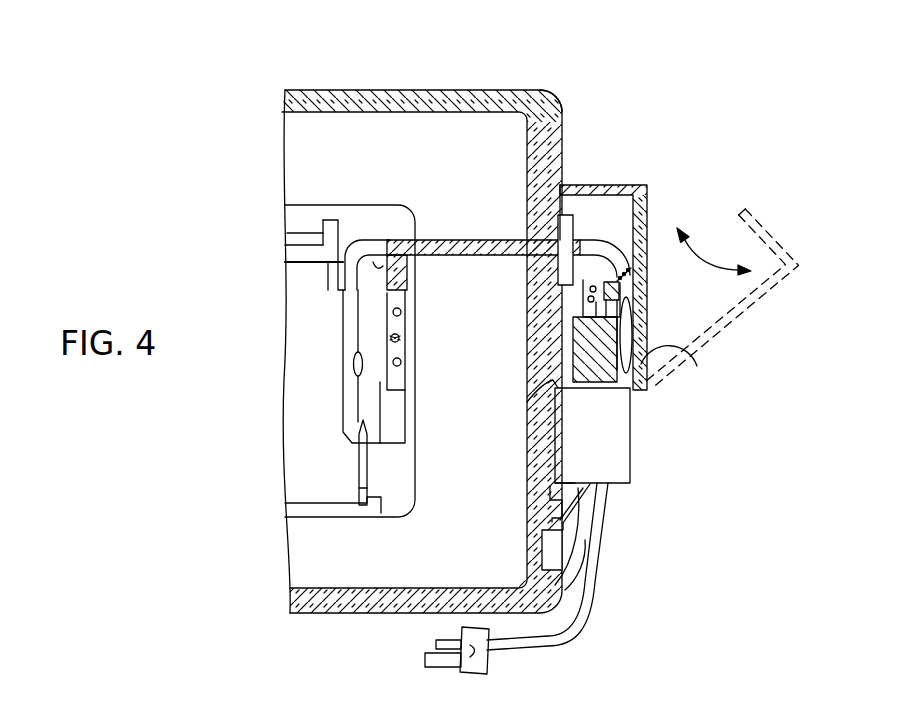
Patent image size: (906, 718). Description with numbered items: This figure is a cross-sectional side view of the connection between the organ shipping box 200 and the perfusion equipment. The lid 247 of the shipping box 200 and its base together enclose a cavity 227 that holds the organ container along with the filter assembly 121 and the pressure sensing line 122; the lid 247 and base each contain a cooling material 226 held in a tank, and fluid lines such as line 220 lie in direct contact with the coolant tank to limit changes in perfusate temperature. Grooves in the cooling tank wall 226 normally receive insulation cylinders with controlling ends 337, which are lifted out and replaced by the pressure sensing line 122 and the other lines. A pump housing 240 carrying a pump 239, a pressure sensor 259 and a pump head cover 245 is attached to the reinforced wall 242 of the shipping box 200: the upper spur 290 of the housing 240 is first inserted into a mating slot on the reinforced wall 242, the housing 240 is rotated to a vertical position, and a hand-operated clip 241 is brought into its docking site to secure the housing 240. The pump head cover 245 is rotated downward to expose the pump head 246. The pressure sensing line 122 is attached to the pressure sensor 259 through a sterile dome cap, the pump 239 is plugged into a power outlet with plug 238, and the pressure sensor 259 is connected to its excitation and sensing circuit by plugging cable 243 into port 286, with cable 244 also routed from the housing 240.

The organ shipping box 200 is at (312, 78).
The cooling material 226 is at (477, 128).
The lid 247 is at (548, 100).
The cavity 227 is at (395, 222).
The controlling end 337 is at (332, 220).
The fluid line 220 is at (433, 257).
The pressure sensing line 122 is at (377, 266).
The filter assembly 121 is at (571, 214).
The pump head 246 is at (647, 190).
The pump 239 is at (630, 417).
The pressure sensor 259 is at (672, 380).
The pump housing 240 is at (616, 430).
The upper spur 290 is at (527, 402).
The hand-operated clip 241 is at (585, 498).
The cable 243 is at (590, 540).
The reinforced wall 242 is at (565, 580).
The port 286 is at (542, 548).
The cable 244 is at (598, 630).
The plug 238 is at (423, 658).
The pump head cover 245 is at (752, 313).